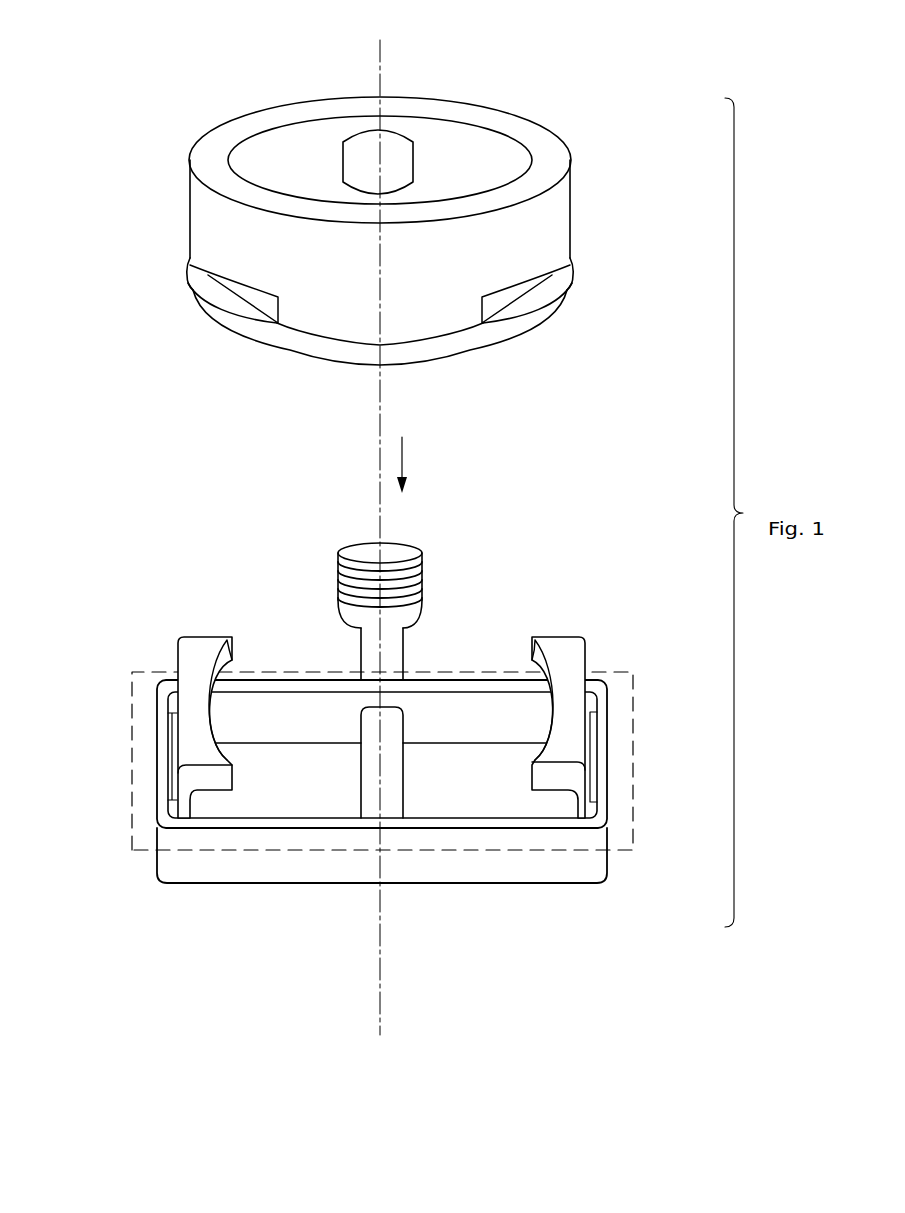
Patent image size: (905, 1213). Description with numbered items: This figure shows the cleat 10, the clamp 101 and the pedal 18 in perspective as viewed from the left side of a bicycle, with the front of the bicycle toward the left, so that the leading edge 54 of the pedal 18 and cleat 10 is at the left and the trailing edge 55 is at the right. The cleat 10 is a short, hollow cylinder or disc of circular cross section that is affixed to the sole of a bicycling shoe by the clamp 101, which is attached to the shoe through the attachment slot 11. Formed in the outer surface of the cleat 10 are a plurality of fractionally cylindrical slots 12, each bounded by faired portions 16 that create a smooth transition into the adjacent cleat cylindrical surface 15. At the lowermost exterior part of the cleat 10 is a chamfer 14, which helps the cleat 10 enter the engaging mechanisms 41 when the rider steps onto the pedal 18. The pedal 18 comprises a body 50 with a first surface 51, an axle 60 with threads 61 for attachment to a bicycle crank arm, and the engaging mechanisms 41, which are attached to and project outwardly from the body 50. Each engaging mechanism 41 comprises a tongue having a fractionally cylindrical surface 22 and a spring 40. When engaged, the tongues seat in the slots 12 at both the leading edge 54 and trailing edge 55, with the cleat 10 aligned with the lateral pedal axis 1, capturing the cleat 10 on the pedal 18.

The lateral pedal axis 1 is at (389, 548).
The cleat 10 is at (427, 268).
The clamp 101 is at (311, 156).
The attachment slot 11 is at (374, 143).
The fractionally cylindrical slot 12 is at (154, 262).
The chamfer 14 is at (485, 342).
The cleat cylindrical surface 15 is at (527, 222).
The faired portion 16 is at (270, 312).
The pedal 18 is at (352, 909).
The fractionally cylindrical surface 22 is at (233, 662).
The spring 40 is at (173, 728).
The engaging mechanism 41 is at (202, 616).
The body 50 is at (592, 866).
The first surface 51 is at (628, 672).
The leading edge 54 is at (125, 784).
The trailing edge 55 is at (637, 768).
The axle 60 is at (392, 640).
The threads 61 is at (372, 553).